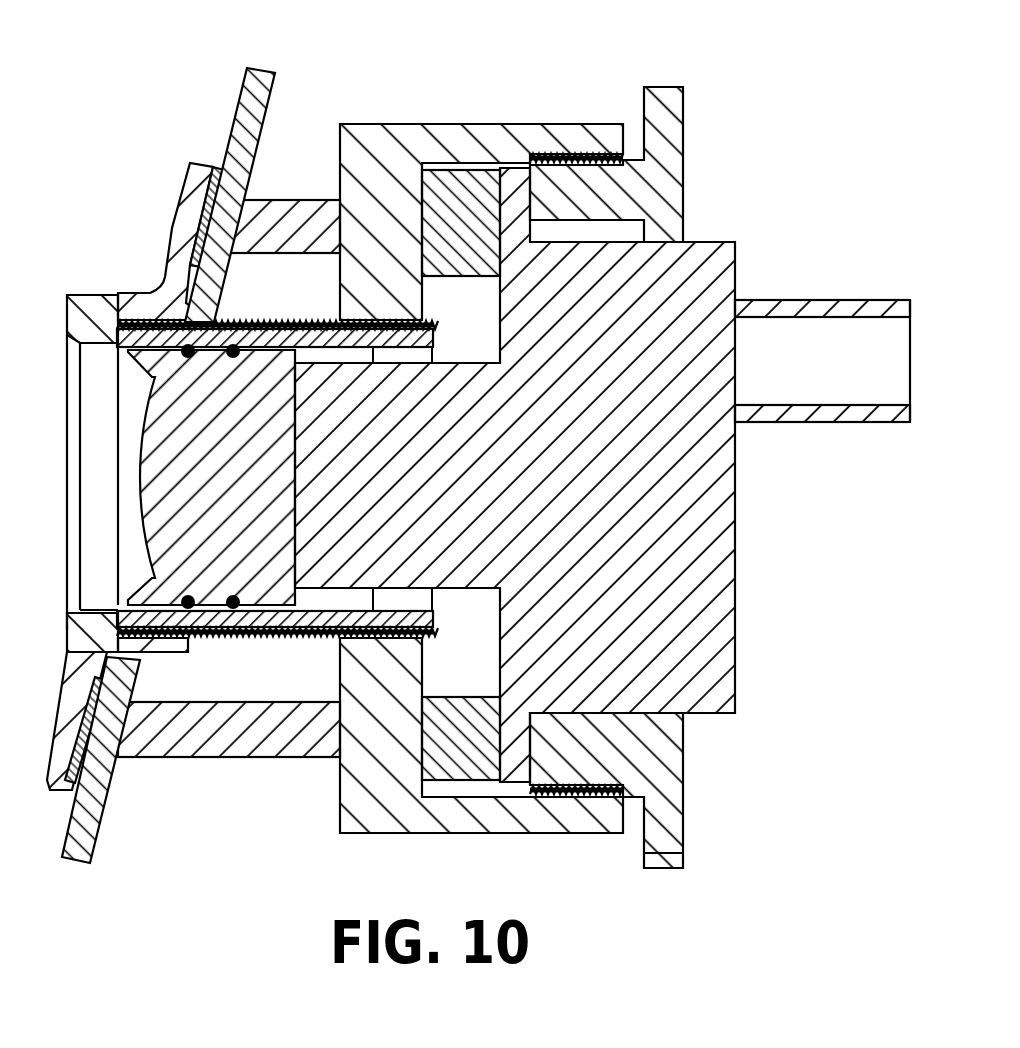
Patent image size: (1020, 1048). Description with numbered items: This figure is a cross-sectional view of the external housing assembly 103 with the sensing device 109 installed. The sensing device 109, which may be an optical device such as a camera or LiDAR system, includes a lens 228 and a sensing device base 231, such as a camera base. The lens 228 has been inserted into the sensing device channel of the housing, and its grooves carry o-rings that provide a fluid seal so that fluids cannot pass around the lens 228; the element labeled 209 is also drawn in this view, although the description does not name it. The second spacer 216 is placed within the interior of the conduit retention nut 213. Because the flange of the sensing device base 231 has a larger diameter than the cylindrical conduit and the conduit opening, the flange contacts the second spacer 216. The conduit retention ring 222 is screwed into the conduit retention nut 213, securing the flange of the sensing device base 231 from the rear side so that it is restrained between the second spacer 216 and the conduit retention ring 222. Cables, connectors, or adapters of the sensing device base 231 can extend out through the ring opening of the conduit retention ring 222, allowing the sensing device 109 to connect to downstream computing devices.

The external housing assembly 103 is at (754, 28).
The sensing device 109 is at (718, 728).
The lens barrel 209 is at (245, 322).
The conduit retention nut 213 is at (405, 124).
The second spacer 216 is at (440, 167).
The conduit retention ring 222 is at (663, 88).
The lens 228 is at (137, 360).
The sensing device base 231 is at (735, 242).